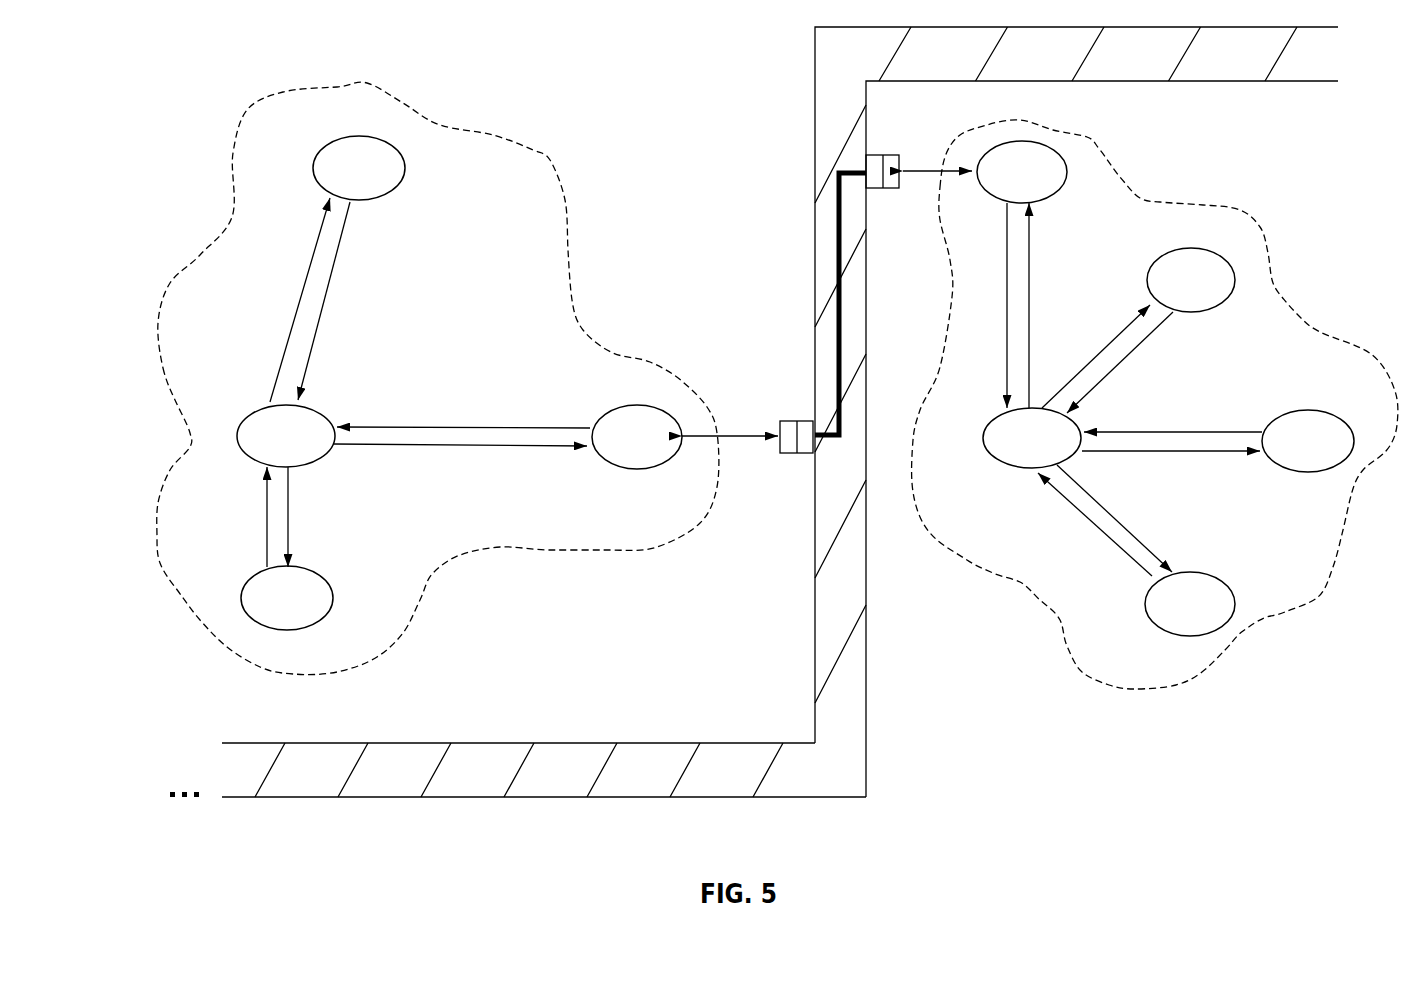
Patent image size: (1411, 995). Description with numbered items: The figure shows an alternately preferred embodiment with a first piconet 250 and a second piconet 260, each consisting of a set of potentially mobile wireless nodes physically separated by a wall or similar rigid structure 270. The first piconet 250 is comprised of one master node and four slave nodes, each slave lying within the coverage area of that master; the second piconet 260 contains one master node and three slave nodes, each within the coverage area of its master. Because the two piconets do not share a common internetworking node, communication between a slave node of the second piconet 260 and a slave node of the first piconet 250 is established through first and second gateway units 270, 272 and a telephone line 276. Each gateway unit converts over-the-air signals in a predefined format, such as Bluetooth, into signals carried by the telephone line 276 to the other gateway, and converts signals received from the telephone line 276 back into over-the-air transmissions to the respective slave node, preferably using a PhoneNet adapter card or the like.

The first piconet 250 is at (1264, 618).
The second piconet 260 is at (417, 607).
The wall or similar rigid structure 270 is at (912, 149).
The second gateway unit 272 is at (765, 404).
The telephone line 276 is at (837, 237).